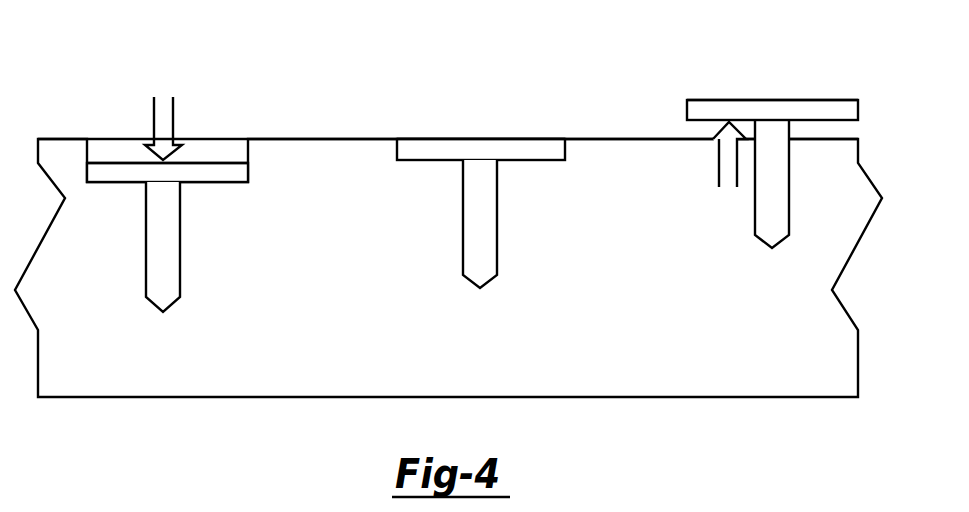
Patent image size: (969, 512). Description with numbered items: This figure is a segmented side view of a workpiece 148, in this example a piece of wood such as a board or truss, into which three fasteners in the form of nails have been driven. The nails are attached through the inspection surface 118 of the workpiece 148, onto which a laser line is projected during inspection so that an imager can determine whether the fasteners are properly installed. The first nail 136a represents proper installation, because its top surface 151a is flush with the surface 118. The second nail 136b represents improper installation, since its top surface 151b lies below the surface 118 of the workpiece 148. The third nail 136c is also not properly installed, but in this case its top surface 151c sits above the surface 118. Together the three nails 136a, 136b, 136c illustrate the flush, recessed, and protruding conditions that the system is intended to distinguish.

The inspection surface 118 is at (333, 137).
The first component 136a is at (417, 150).
The second component 136b is at (108, 172).
The third component 136c is at (708, 110).
The top surface of the nail 151a is at (492, 137).
The top surface of the nail 151b is at (230, 158).
The top surface of the nail 151c is at (759, 97).
The workpiece 148 is at (505, 400).